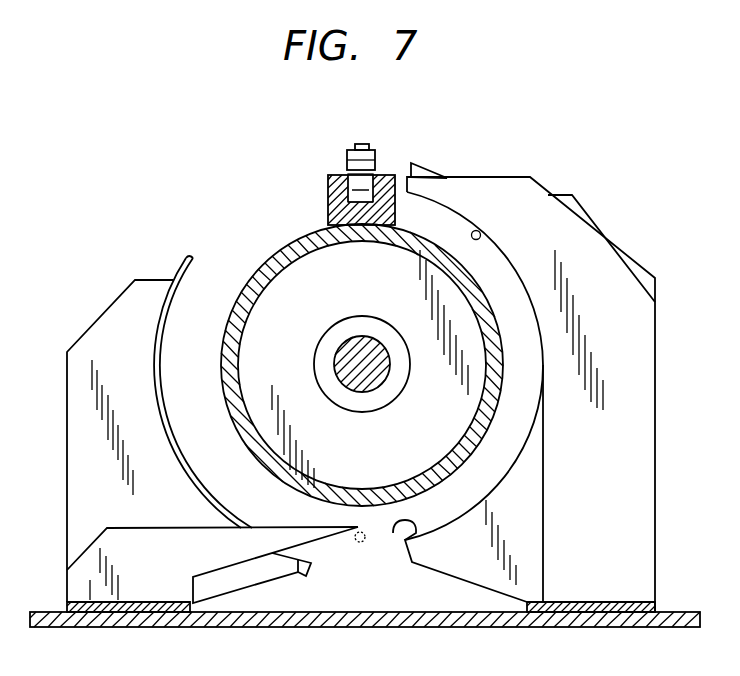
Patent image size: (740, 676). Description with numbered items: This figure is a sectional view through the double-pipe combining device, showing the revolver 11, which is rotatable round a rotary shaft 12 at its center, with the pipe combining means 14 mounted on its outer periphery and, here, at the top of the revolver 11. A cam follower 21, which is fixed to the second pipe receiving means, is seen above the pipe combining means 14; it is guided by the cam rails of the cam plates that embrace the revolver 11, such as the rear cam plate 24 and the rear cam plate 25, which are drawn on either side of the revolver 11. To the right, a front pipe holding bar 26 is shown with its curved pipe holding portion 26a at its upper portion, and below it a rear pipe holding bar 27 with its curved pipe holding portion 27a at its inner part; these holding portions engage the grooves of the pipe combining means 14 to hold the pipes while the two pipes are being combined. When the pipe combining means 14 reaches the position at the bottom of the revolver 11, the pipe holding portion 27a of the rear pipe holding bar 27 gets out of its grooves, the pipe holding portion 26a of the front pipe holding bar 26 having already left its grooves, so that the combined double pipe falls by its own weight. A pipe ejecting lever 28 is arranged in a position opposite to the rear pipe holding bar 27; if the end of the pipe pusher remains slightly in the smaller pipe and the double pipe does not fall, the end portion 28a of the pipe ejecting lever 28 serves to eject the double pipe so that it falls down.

The revolver 11 is at (275, 250).
The rotary shaft 12 is at (388, 362).
The pipe combining means 14 is at (328, 187).
The cam follower 21 is at (346, 155).
The rear cam plate 24 is at (430, 168).
The rear cam plate 25 is at (188, 257).
The front pipe holding bar 26 is at (497, 176).
The curved pipe holding portion 26a is at (480, 233).
The rear pipe holding bar 27 is at (482, 570).
The curved pipe holding portion 27a is at (393, 533).
The pipe ejecting lever 28 is at (222, 558).
The end portion of pipe ejecting lever 28a is at (333, 537).